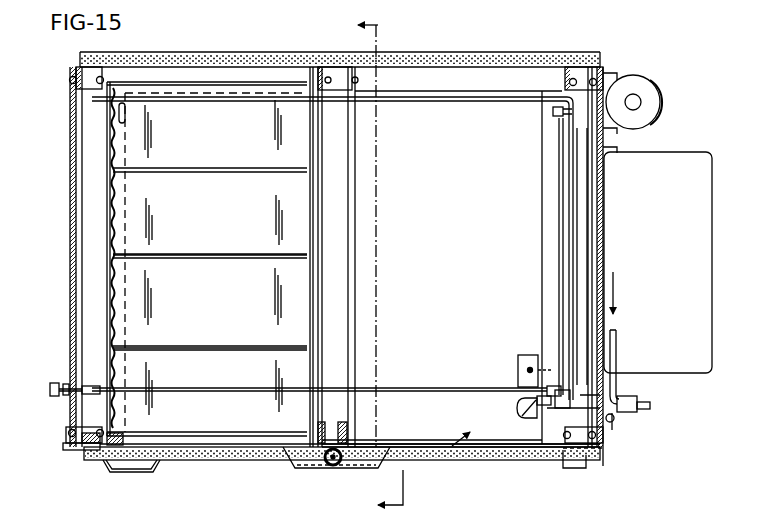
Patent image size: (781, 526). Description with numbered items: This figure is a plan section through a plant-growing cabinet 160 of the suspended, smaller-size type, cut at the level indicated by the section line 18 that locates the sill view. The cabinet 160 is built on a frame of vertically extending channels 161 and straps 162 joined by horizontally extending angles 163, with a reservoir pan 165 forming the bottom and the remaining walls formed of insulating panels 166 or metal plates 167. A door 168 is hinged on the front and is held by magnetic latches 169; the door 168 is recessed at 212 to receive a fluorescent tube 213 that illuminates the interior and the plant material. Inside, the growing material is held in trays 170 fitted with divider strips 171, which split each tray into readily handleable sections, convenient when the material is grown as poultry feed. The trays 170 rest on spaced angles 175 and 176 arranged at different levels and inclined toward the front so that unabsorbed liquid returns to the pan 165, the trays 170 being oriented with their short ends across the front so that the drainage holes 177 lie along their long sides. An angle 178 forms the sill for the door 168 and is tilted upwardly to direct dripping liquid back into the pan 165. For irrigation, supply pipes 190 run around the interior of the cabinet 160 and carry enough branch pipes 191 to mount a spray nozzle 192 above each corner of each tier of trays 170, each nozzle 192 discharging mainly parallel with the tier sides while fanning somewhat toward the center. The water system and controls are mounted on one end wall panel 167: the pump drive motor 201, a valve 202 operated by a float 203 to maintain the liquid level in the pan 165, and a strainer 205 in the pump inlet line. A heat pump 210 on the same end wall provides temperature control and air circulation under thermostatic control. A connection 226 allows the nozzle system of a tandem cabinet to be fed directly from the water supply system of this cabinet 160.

The section line 18— 18 is at (392, 264).
The cabinet 160 is at (211, 47).
The vertically extending channels 161 is at (72, 67).
The straps 162 is at (346, 432).
The horizontally extending angles 163 is at (501, 72).
The reservoir pan 165 is at (491, 462).
The insulating panels 166 is at (447, 62).
The metal plates 167 is at (72, 165).
The door 168 is at (247, 462).
The magnetic latches 169 is at (101, 461).
The trays 170 is at (220, 222).
The divider strips 171 is at (255, 253).
The angles 175 is at (112, 255).
The angles 176 is at (385, 303).
The drainage holes 177 is at (303, 135).
The angle 178 is at (453, 444).
The supply pipes 190 is at (403, 102).
The branch pipes 191 is at (565, 120).
The spray nozzle 192 is at (126, 115).
The drive motor 201 is at (659, 112).
The valve 202 is at (617, 414).
The float 203 is at (520, 405).
The strainer 205 is at (520, 357).
The heat pump 210 is at (710, 256).
The recess 212 is at (300, 466).
The fluorescent tube 213 is at (333, 466).
The connection 226 is at (52, 382).